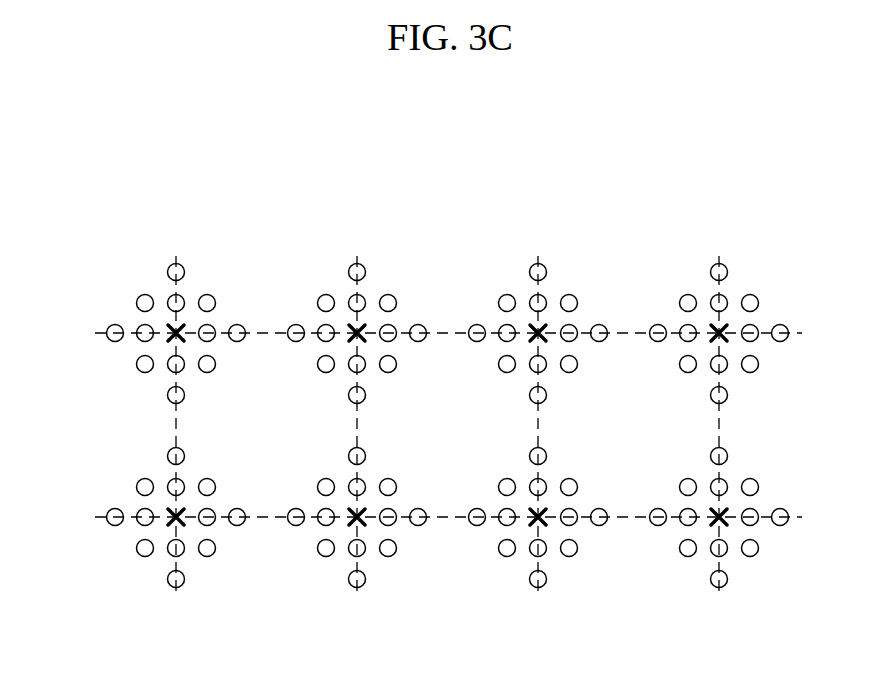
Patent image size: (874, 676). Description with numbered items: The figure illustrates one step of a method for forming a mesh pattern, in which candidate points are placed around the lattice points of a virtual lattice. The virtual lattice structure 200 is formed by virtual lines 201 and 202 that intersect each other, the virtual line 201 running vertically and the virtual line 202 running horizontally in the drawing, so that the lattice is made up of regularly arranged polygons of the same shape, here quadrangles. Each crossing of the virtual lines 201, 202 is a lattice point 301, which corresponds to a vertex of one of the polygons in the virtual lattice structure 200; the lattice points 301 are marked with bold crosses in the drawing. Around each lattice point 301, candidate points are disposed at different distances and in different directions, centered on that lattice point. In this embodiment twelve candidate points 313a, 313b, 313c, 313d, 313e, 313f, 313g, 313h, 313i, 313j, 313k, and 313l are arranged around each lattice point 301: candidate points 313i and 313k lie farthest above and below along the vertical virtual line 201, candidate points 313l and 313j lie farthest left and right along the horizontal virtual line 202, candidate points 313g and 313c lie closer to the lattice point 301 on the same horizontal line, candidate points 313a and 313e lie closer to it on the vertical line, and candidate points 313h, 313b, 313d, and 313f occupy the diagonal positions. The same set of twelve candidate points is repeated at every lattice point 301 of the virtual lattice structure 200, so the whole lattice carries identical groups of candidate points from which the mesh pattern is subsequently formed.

The virtual lattice structure 200 is at (754, 213).
The virtual line 201 is at (720, 256).
The virtual line 202 is at (800, 331).
The lattice point 301 is at (184, 339).
The candidate point 313a is at (183, 287).
The candidate point 313b is at (212, 296).
The candidate point 313c is at (215, 327).
The candidate point 313d is at (213, 372).
The candidate point 313e is at (170, 372).
The candidate point 313f is at (139, 371).
The candidate point 313g is at (139, 340).
The candidate point 313h is at (146, 294).
The candidate point 313i is at (177, 263).
The candidate point 313j is at (243, 327).
The candidate point 313k is at (183, 401).
The candidate point 313l is at (115, 324).